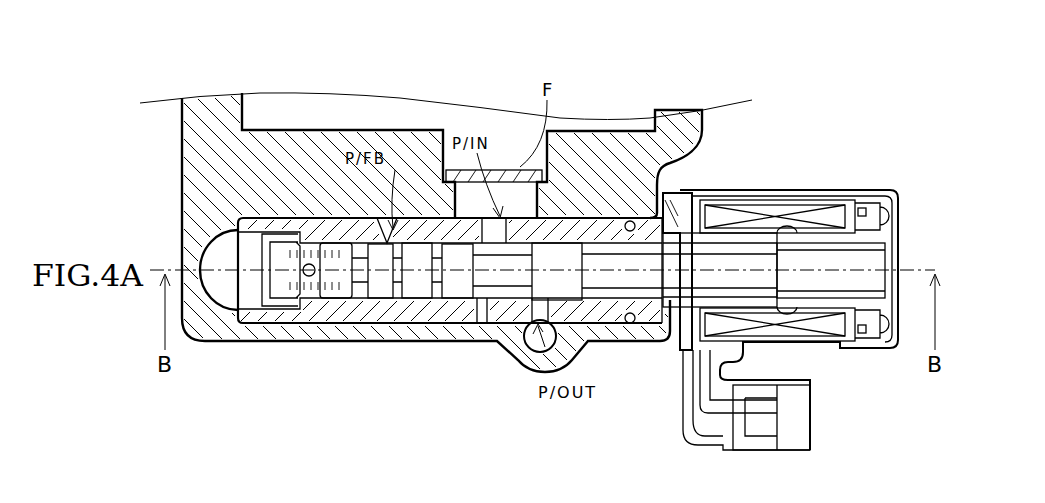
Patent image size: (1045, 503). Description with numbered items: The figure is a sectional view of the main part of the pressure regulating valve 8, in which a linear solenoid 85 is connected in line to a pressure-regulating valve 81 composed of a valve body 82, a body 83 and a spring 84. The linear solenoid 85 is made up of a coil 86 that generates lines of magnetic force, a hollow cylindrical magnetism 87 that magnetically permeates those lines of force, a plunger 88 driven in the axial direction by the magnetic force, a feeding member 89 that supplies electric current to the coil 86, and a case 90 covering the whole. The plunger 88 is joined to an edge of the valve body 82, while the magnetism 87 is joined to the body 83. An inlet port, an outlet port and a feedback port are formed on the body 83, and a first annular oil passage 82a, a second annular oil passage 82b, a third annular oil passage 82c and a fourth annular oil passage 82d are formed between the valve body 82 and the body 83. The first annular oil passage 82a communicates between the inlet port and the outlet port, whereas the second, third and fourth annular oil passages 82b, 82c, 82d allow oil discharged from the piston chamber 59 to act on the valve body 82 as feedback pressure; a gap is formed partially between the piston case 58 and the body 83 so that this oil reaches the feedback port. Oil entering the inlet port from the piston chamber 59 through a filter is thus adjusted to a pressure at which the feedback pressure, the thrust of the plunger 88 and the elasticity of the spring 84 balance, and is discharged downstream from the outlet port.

The piston case 58 is at (230, 135).
The piston chamber 59 is at (408, 125).
The pressure regulating valve 8 is at (568, 272).
The pressure-regulating valve 81 is at (507, 332).
The valve body 82 is at (548, 320).
The first annular oil passage 82a is at (515, 305).
The second annular oil passage 82b is at (441, 300).
The third annular oil passage 82c is at (385, 300).
The fourth annular oil passage 82d is at (345, 300).
The body 83 is at (418, 320).
The spring 84 is at (300, 315).
The linear solenoid 85 is at (750, 252).
The coil 86 is at (812, 208).
The magnetism 87 is at (833, 238).
The plunger 88 is at (716, 268).
The feeding member 89 is at (812, 398).
The case 90 is at (818, 190).